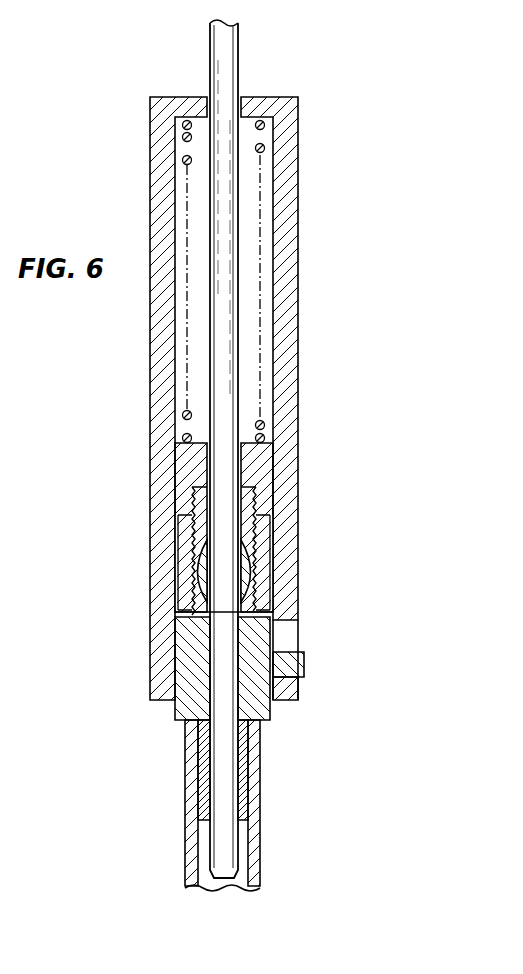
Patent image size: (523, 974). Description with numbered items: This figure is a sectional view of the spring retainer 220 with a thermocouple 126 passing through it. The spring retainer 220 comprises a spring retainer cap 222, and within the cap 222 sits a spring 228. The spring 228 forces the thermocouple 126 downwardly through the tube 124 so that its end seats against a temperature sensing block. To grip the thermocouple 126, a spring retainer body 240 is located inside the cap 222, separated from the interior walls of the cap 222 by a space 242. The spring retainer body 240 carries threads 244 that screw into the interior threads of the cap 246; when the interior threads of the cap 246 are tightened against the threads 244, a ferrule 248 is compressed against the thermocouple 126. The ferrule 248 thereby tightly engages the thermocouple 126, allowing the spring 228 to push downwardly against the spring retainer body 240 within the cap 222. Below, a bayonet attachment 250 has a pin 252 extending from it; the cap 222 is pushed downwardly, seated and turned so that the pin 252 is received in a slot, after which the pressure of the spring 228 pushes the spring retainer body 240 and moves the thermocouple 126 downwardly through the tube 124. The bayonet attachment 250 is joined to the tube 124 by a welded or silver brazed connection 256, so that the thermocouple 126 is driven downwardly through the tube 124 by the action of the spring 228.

The tube 124 is at (254, 847).
The thermocouple 126 is at (234, 60).
The spring retainer 220 is at (313, 336).
The spring retainer cap 222 is at (282, 207).
The spring 228 is at (264, 148).
The spring retainer body 240 is at (274, 442).
The space 242 is at (254, 458).
The threads 244 is at (262, 500).
The interior threads of the cap 246 is at (258, 600).
The ferrule 248 is at (251, 568).
The bayonet attachment 250 is at (264, 708).
The pin 252 is at (294, 664).
The welded or silver brazed connection 256 is at (251, 773).